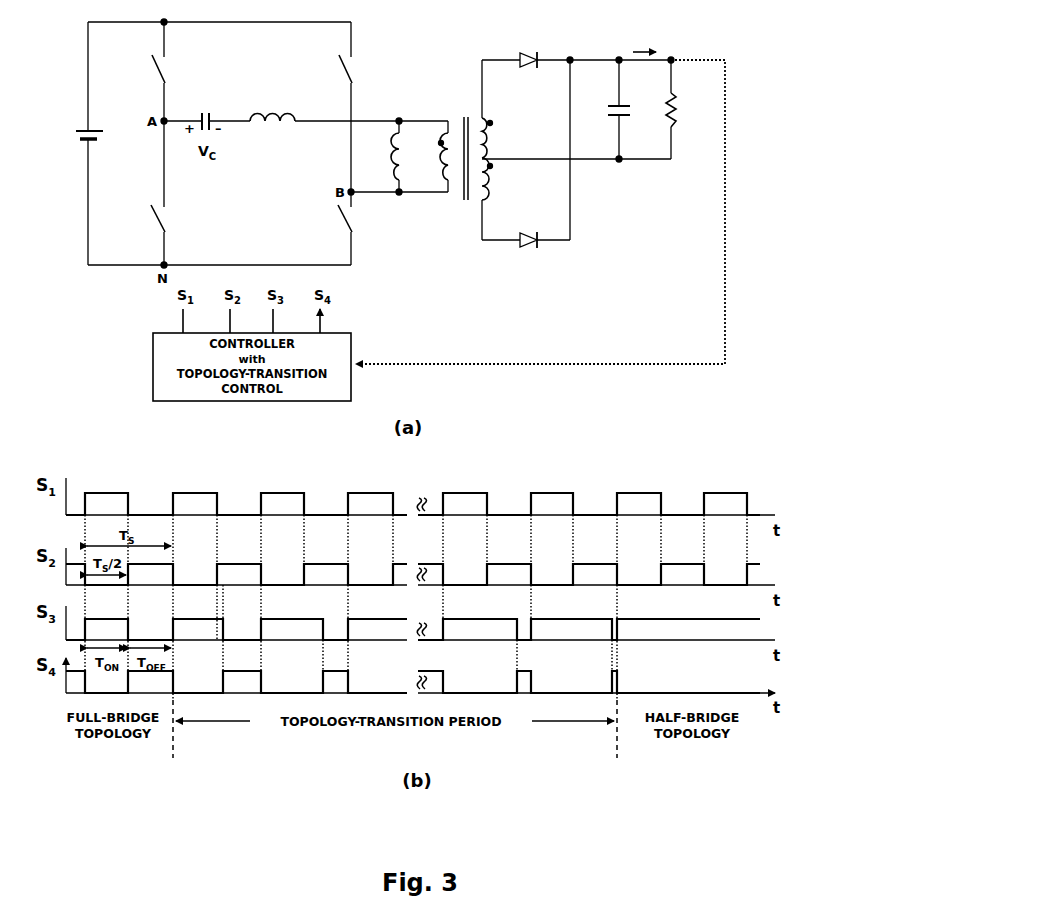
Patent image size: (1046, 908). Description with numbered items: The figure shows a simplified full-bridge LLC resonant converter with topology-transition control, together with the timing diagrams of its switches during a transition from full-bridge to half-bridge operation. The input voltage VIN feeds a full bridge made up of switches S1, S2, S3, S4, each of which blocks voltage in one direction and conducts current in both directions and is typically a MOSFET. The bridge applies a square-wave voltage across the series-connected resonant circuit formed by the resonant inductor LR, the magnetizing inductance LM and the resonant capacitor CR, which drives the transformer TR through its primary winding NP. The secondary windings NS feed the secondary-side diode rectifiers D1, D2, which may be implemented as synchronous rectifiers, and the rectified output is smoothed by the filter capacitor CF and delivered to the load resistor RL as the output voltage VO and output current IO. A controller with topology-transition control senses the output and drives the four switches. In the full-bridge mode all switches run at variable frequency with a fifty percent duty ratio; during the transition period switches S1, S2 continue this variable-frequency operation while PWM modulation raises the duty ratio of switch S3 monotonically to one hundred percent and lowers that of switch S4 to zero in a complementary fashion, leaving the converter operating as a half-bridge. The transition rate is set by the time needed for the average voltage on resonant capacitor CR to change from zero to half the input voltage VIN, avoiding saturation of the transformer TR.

The switch S1 is at (142, 69).
The switch S2 is at (142, 220).
The switch S3 is at (329, 220).
The switch S4 is at (329, 69).
The input voltage VIN is at (73, 142).
The resonant capacitor CR is at (204, 110).
The resonant inductor LR is at (272, 106).
The magnetizing inductance LM is at (385, 156).
The transformer TR is at (465, 147).
The primary winding NP is at (433, 156).
The secondary winding NS is at (497, 159).
The secondary-side diode rectifier D1 is at (525, 49).
The secondary-side diode rectifier D2 is at (525, 230).
The filter capacitor CF is at (607, 109).
The load resistor RL is at (658, 109).
The output current IO is at (644, 41).
The output voltage VO is at (690, 109).